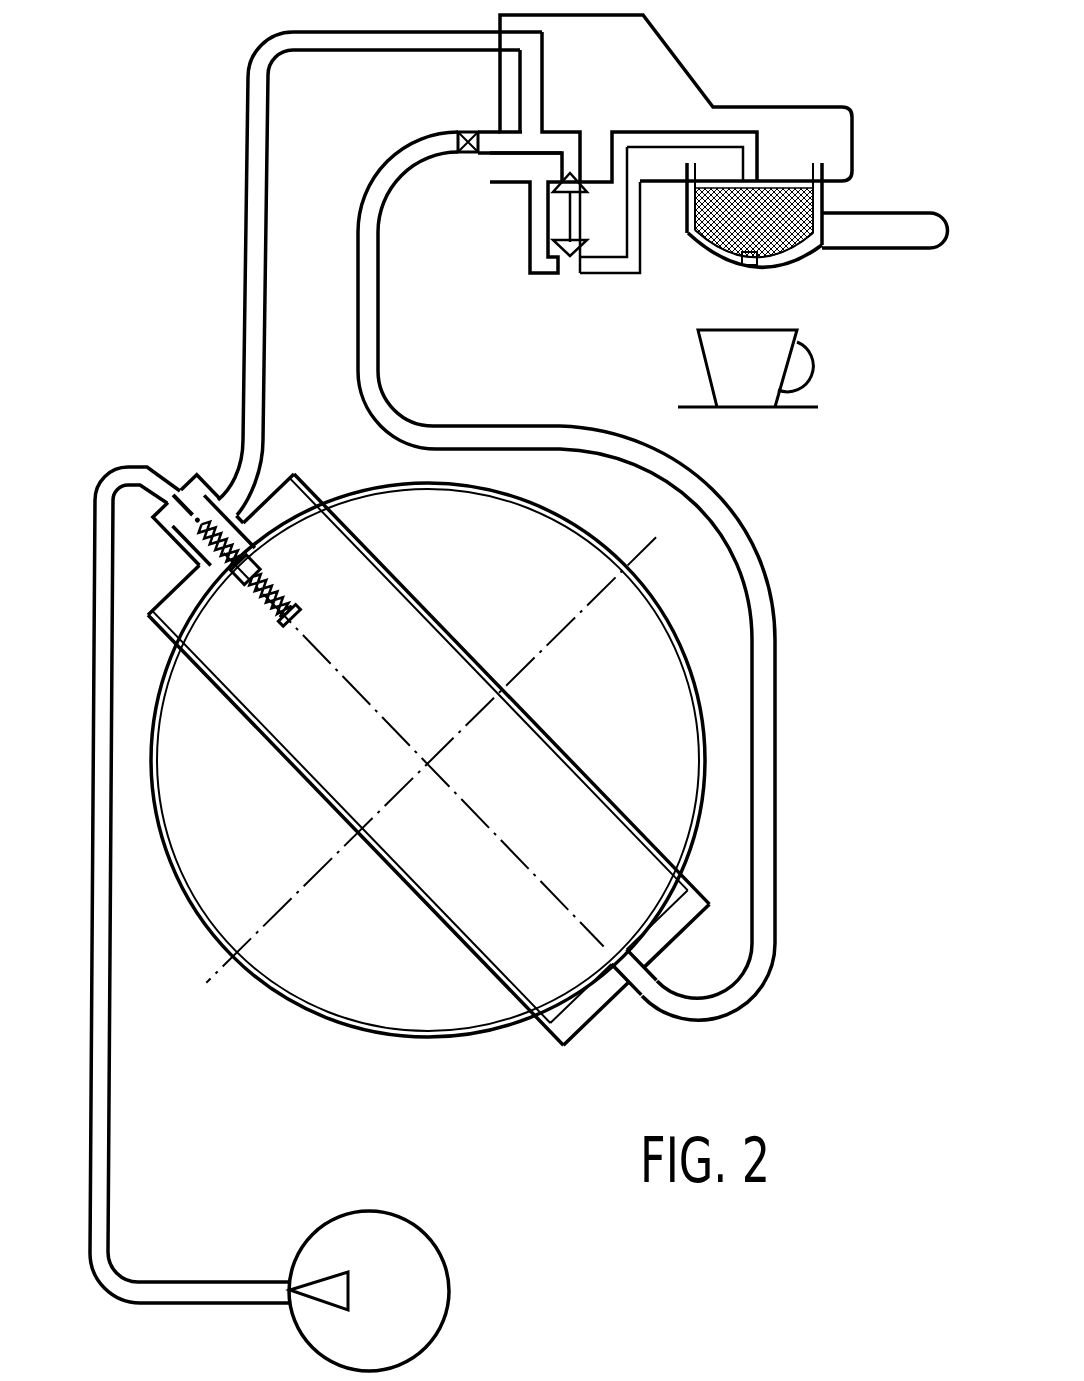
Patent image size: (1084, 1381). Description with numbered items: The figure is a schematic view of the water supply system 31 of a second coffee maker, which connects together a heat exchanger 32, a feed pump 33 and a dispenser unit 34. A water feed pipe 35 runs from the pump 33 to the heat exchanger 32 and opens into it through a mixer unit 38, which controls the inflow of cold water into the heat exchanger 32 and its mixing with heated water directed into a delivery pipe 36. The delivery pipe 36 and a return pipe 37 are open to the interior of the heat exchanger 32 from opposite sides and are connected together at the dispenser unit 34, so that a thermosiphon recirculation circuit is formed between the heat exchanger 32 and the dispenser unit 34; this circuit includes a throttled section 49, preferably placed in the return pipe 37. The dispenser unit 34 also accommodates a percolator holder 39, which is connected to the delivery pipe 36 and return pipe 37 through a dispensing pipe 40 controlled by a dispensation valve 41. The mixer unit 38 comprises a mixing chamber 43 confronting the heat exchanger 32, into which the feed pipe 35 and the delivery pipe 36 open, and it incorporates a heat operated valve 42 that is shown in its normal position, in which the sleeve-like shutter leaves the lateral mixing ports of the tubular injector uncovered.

The water supply system 31 is at (766, 477).
The heat exchanger 32 is at (507, 980).
The feed pump 33 is at (413, 1263).
The dispenser unit 34 is at (820, 118).
The water feed pipe 35 is at (100, 1103).
The delivery pipe 36 is at (250, 237).
The return pipe 37 is at (767, 742).
The mixer unit 38 is at (145, 521).
The percolator holder 39 is at (793, 222).
The dispensing pipe 40 is at (710, 135).
The dispensation valve 41 is at (568, 258).
The heat operated valve 42 is at (232, 588).
The mixing chamber 43 is at (220, 507).
The throttled section 49 is at (468, 131).